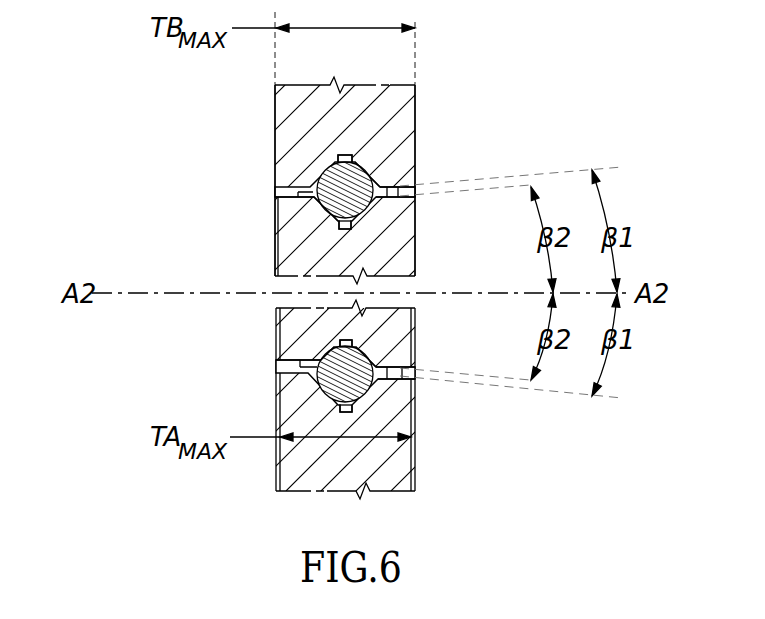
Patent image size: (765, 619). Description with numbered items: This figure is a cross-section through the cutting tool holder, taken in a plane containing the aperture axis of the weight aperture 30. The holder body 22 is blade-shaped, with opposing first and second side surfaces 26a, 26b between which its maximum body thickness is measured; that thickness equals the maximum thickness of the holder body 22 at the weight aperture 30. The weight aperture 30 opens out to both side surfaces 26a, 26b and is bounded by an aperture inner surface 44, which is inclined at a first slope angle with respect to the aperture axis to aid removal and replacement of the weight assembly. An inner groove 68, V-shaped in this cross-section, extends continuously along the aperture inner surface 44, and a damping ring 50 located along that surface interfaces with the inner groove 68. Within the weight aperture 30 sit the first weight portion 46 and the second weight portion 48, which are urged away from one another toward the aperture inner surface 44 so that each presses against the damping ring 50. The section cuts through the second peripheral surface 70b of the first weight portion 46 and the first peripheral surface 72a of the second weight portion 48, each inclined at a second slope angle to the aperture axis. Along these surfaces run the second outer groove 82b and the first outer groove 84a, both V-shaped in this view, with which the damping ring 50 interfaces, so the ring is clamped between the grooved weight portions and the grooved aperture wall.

The holder body 22 is at (352, 118).
The first side surface 26a is at (420, 135).
The second side surface 26b is at (272, 107).
The weight aperture 30 is at (280, 368).
The aperture inner surface 44 is at (410, 190).
The first weight portion 46 is at (318, 247).
The second weight portion 48 is at (315, 330).
The damping ring 50 is at (322, 185).
The inner groove 68 is at (340, 156).
The second peripheral surface of first weight portion 70b is at (400, 184).
The first peripheral surface of second weight portion 72a is at (410, 376).
The second outer groove of first weight portion 82b is at (340, 226).
The first outer groove of second weight portion 84a is at (340, 341).